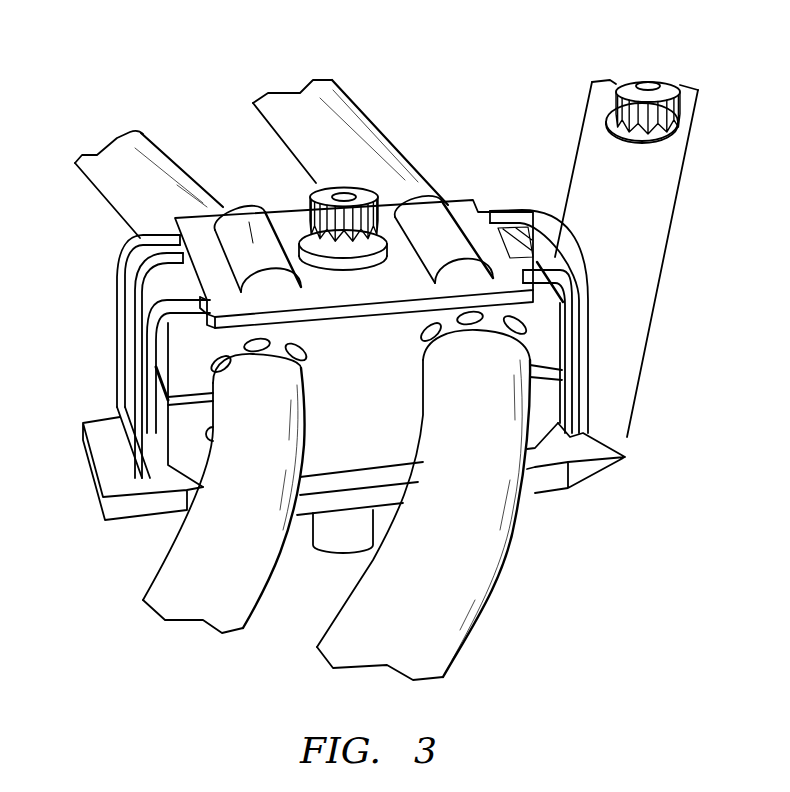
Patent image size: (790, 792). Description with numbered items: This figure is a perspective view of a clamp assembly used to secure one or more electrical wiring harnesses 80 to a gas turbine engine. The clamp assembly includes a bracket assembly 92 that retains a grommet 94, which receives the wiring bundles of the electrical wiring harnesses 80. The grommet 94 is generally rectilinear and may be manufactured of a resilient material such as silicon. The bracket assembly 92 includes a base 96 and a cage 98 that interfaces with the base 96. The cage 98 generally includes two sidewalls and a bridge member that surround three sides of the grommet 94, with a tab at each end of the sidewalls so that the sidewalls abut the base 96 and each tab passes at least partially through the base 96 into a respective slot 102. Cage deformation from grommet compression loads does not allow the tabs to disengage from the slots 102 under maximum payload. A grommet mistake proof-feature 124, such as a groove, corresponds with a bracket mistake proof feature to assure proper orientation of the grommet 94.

The electrical wiring harness 80 is at (340, 640).
The bracket assembly 92 is at (583, 440).
The grommet 94 is at (187, 365).
The base 96 is at (577, 475).
The cage 98 is at (462, 212).
The slot 102 is at (340, 192).
The grommet mistake proof-feature 124 is at (223, 213).